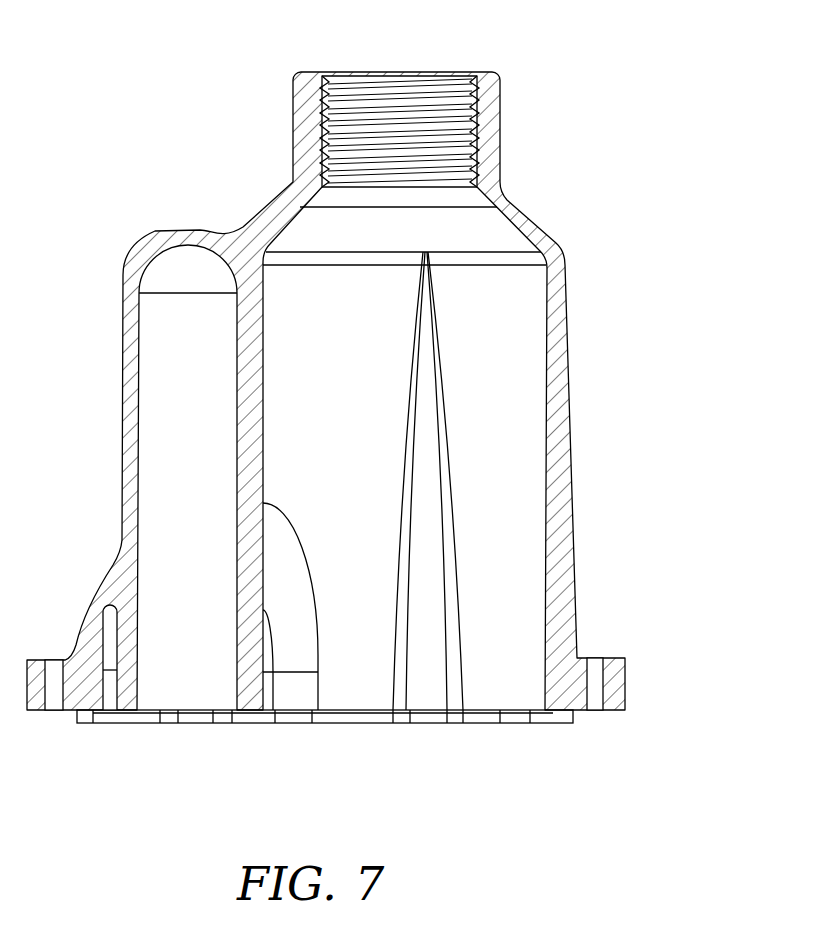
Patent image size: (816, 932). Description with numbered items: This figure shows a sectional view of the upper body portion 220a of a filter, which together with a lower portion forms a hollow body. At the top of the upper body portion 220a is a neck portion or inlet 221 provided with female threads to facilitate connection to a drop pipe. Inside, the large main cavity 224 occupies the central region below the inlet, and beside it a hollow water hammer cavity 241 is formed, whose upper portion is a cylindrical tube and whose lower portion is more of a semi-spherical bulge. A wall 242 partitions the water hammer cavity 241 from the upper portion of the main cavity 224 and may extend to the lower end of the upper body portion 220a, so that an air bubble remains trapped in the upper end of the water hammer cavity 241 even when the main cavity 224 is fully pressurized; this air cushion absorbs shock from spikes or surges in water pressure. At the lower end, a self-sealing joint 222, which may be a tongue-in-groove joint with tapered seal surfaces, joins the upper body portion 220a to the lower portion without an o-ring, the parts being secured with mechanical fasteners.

The upper body portion 220a is at (667, 61).
The neck portion or inlet 221 is at (397, 72).
The self-sealing joint 222 is at (553, 721).
The main cavity 224 is at (350, 298).
The water hammer cavity 241 is at (157, 390).
The wall 242 is at (248, 560).